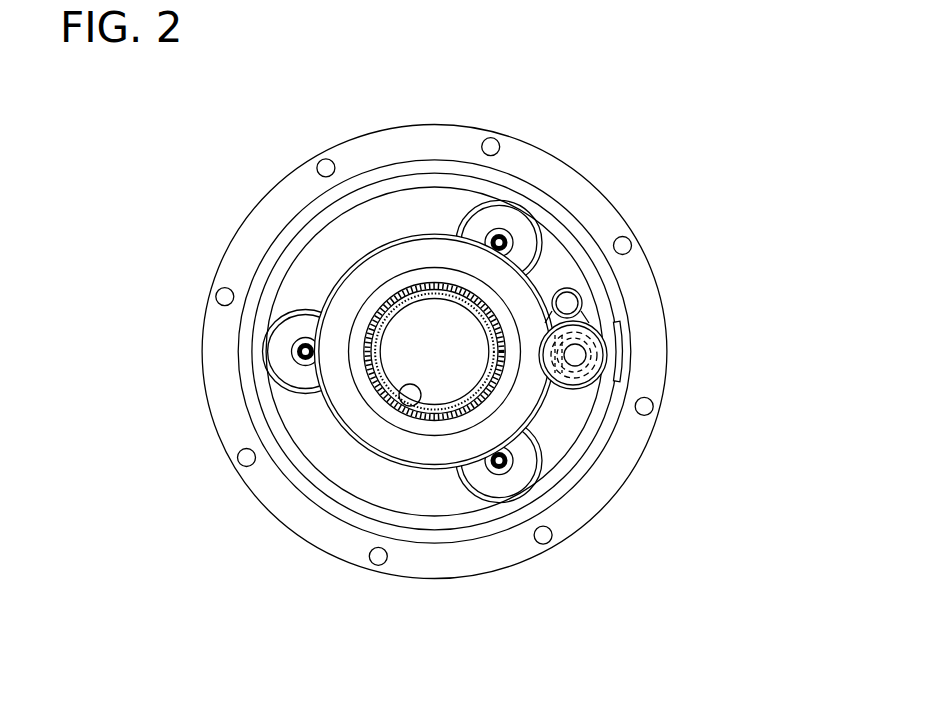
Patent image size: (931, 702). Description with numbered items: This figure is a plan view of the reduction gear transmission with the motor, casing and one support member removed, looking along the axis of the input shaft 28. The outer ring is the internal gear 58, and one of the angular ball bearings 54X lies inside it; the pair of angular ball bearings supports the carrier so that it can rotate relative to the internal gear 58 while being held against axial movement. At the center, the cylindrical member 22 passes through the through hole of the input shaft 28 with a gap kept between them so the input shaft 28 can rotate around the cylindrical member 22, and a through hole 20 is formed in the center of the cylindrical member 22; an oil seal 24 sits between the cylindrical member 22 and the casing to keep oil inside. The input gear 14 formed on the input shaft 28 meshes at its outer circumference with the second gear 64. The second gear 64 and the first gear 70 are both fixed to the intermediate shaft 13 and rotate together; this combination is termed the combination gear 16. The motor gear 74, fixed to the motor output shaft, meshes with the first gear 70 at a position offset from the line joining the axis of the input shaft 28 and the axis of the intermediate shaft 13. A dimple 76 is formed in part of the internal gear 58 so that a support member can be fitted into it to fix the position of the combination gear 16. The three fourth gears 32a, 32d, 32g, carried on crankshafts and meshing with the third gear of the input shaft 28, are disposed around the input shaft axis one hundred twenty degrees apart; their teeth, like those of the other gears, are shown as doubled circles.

The intermediate shaft 13 is at (578, 355).
The input gear 14 is at (517, 285).
The combination gear 16 is at (670, 269).
The through hole 20 is at (420, 410).
The cylindrical member 22 is at (400, 390).
The oil seal 24 is at (422, 277).
The input shaft 28 is at (400, 293).
The fourth gear 32a is at (292, 323).
The fourth gear 32d is at (522, 470).
The fourth gear 32g is at (518, 228).
The angular ball bearing 54X is at (305, 237).
The internal gear 58 is at (222, 350).
The second gear 64 is at (590, 343).
The first gear 70 is at (600, 335).
The motor gear 74 is at (567, 305).
The dimple 76 is at (622, 372).